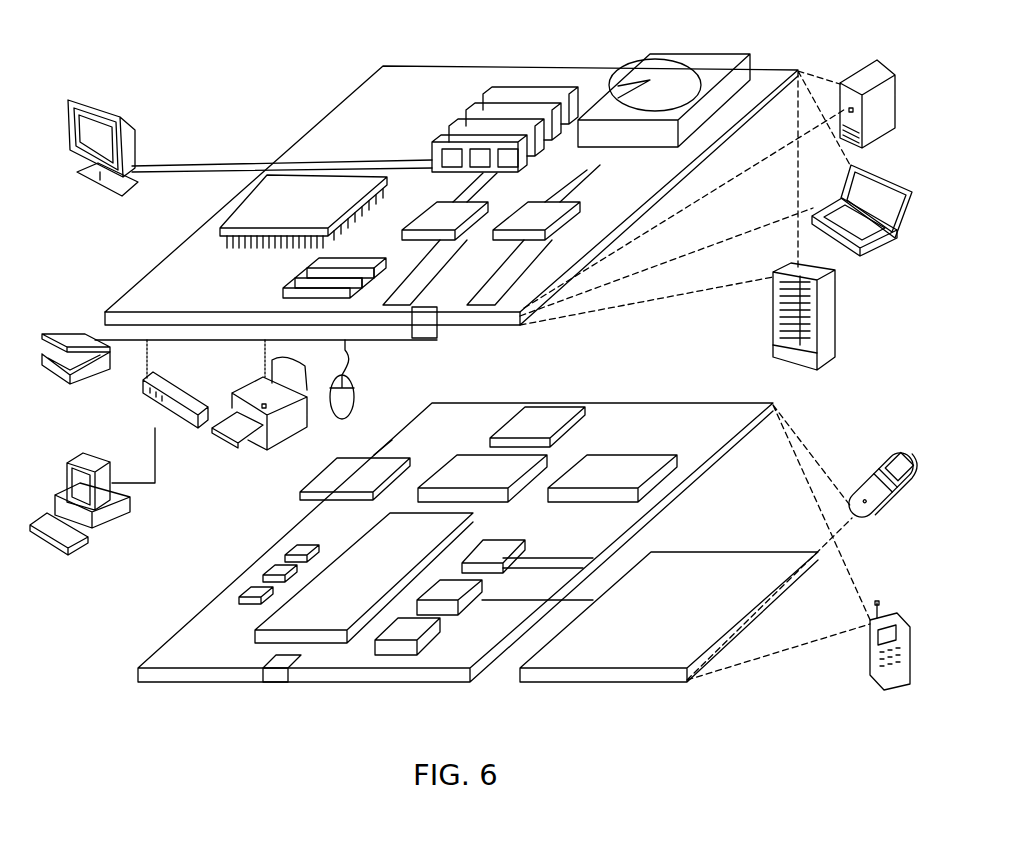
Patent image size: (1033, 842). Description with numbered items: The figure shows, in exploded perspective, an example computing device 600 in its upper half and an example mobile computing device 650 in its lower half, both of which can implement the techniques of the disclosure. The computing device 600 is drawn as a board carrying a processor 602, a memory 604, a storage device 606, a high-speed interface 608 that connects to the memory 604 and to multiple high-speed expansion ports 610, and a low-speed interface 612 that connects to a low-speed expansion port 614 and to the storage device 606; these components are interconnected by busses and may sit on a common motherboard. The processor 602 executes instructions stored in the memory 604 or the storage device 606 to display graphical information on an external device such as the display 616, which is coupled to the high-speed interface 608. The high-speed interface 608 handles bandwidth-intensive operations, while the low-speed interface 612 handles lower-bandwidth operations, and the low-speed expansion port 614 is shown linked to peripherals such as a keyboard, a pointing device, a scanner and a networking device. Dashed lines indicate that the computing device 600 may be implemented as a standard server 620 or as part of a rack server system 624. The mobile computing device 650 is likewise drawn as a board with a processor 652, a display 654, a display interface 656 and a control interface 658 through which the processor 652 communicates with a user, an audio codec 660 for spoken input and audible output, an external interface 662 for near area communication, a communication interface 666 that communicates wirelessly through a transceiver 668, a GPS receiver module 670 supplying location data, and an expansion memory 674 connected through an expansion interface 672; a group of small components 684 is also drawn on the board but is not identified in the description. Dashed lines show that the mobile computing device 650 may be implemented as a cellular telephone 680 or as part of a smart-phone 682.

The computing device 600 is at (213, 98).
The processor 602 is at (253, 205).
The memory 604 is at (427, 158).
The storage device 606 is at (597, 97).
The high-speed interface 608 is at (412, 338).
The high-speed expansion ports 610 is at (283, 292).
The low-speed interface 612 is at (537, 273).
The low-speed expansion port 614 is at (478, 290).
The display 616 is at (135, 135).
The standard server 620 is at (896, 100).
The rack server system 624 is at (838, 300).
The mobile computing device 650 is at (188, 586).
The processor 652 is at (255, 629).
The display 654 is at (740, 552).
The display interface 656 is at (441, 630).
The control interface 658 is at (484, 588).
The audio codec 660 is at (527, 553).
The external interface 662 is at (303, 655).
The communication interface 666 is at (470, 455).
The transceiver 668 is at (680, 473).
The GPS receiver module 670 is at (558, 407).
The expansion interface 672 is at (374, 455).
The expansion memory 674 is at (300, 492).
The cellular telephone 680 is at (885, 528).
The smart-phone 682 is at (873, 648).
The chips 684 is at (265, 570).